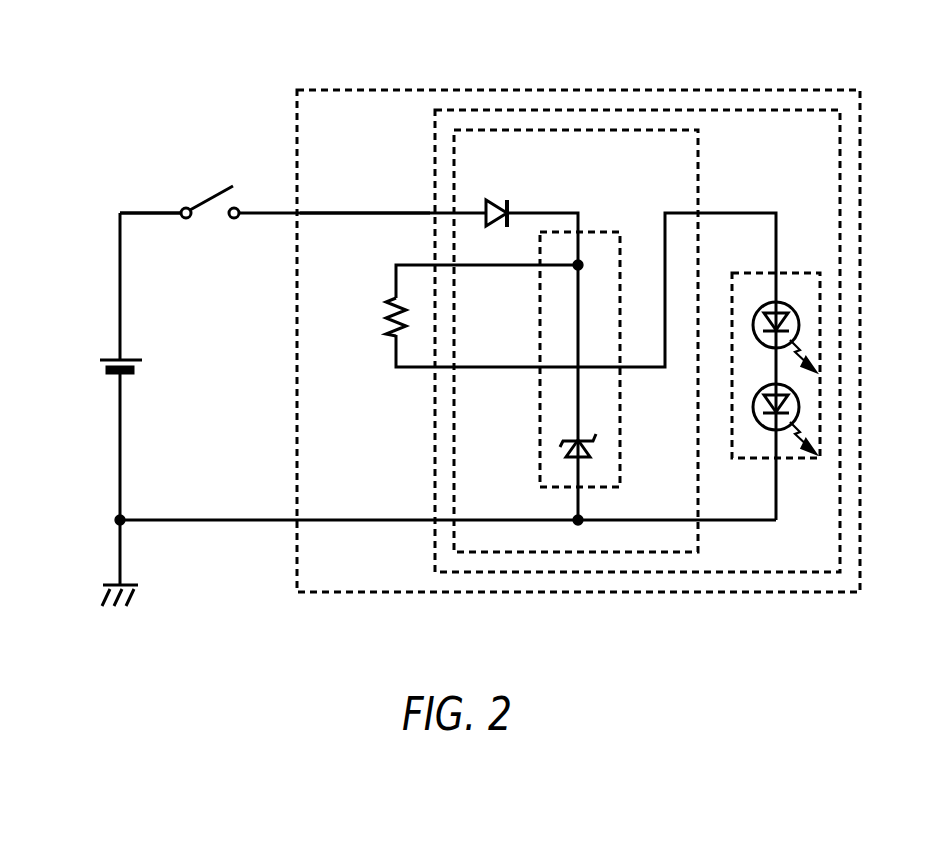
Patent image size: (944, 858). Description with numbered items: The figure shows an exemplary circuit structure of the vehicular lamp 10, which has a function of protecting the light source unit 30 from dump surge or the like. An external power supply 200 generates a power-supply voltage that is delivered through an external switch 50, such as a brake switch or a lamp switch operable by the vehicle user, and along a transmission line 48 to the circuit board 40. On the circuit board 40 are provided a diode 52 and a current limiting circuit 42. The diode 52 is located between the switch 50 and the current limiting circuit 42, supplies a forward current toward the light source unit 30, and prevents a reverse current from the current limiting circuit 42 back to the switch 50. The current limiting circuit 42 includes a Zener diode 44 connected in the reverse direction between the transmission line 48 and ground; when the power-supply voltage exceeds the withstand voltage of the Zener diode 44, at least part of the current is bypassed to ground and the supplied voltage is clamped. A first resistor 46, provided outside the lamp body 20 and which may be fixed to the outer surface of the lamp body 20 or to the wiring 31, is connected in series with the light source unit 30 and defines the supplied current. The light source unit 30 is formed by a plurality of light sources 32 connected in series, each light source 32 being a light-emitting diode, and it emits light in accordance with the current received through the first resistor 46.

The vehicular lamp 10 is at (590, 90).
The lamp body 20 is at (435, 130).
The light source unit 30 is at (800, 272).
The wiring 31 is at (140, 212).
The light source 32 is at (762, 305).
The circuit board 40 is at (698, 158).
The current limiting circuit 42 is at (620, 400).
The Zener diode 44 is at (590, 445).
The first resistor 46 is at (386, 312).
The transmission line 48 is at (345, 212).
The switch 50 is at (200, 183).
The diode 52 is at (500, 200).
The power supply 200 is at (100, 358).